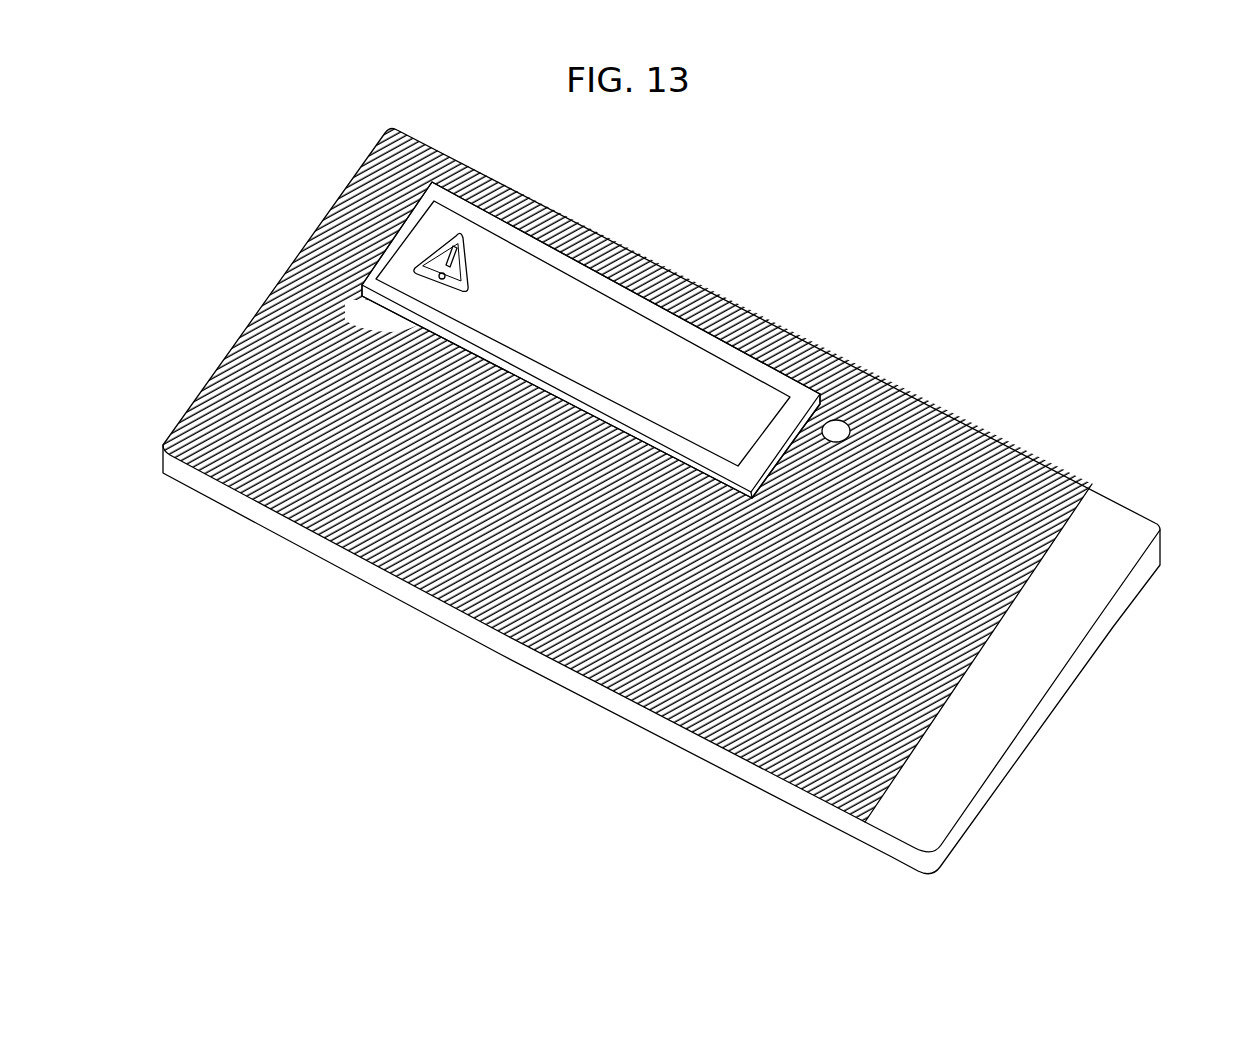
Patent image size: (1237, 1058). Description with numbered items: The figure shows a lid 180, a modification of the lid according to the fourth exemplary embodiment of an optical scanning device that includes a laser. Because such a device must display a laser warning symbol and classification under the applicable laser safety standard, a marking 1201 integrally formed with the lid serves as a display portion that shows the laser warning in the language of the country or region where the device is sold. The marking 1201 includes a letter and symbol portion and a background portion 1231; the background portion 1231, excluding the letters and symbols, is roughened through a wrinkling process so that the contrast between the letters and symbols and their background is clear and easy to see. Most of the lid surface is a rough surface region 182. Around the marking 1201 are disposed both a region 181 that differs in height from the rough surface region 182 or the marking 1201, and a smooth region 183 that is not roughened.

The lid 180 is at (1093, 581).
The region 181 is at (387, 257).
The rough surface region 182 is at (945, 445).
The smooth region 183 is at (782, 435).
The marking 1201 is at (433, 313).
The background portion 1231 is at (740, 418).